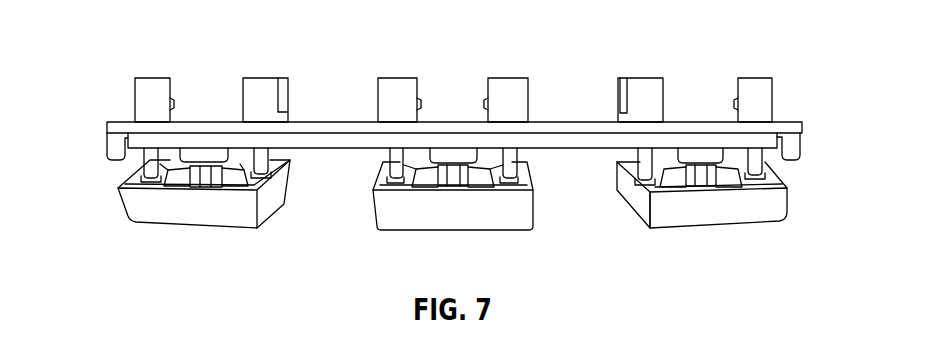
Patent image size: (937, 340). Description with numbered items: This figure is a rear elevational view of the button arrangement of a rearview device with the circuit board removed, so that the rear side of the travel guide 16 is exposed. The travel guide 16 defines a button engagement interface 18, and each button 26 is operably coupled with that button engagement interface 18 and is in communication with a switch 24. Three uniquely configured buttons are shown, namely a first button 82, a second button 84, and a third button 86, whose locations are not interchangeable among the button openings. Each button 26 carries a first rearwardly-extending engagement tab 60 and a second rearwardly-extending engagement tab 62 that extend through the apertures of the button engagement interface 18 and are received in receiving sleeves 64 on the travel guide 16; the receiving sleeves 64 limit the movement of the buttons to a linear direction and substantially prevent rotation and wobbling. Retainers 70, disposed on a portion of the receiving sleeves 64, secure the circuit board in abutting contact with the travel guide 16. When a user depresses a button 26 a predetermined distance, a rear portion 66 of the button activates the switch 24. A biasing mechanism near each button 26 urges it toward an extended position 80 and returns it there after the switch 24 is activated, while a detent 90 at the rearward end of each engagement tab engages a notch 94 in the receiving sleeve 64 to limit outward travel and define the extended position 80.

The travel guide 16 is at (327, 130).
The button engagement interface 18 is at (793, 173).
The switch 24 is at (455, 157).
The button 26 is at (130, 257).
The first rearwardly-extending engagement tab 60 is at (145, 163).
The second rearwardly-extending engagement tab 62 is at (258, 158).
The receiving sleeve 64 is at (145, 95).
The rear portion 66 is at (215, 177).
The retainer 70 is at (735, 105).
The extended position 80 is at (683, 243).
The first button 82 is at (157, 210).
The second button 84 is at (410, 213).
The third button 86 is at (747, 207).
The detent 90 is at (617, 108).
The notch 94 is at (615, 112).